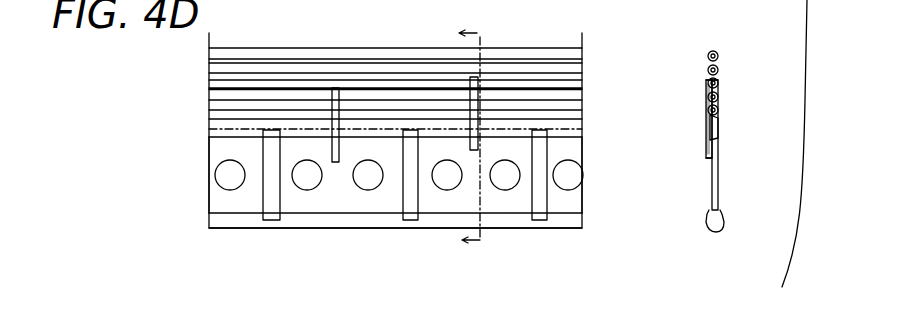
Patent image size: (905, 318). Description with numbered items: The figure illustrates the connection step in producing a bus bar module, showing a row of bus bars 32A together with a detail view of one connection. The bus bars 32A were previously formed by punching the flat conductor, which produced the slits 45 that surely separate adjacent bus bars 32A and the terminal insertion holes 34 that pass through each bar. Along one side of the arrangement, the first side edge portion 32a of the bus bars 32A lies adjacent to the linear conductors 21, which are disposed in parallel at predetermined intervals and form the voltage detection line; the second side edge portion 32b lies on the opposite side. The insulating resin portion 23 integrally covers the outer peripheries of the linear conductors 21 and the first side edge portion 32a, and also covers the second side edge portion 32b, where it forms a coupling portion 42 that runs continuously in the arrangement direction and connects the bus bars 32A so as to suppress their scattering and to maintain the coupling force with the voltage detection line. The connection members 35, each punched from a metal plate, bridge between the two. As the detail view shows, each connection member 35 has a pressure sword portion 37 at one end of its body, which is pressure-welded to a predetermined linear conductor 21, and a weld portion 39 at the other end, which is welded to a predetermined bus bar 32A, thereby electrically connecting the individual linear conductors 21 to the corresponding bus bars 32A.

The bus bar 32A is at (702, 182).
The first side edge portion 32a is at (310, 130).
The second side edge portion 32b is at (303, 0).
The terminal insertion hole 34 is at (369, 162).
The connection member 35 is at (327, 96).
The slit 45 is at (260, 150).
The coupling portion 42 is at (708, 224).
The pressure sword portion 37 is at (707, 79).
The weld portion 39 is at (707, 146).
The linear conductor 21 is at (720, 98).
The insulating resin portion 23 is at (720, 126).